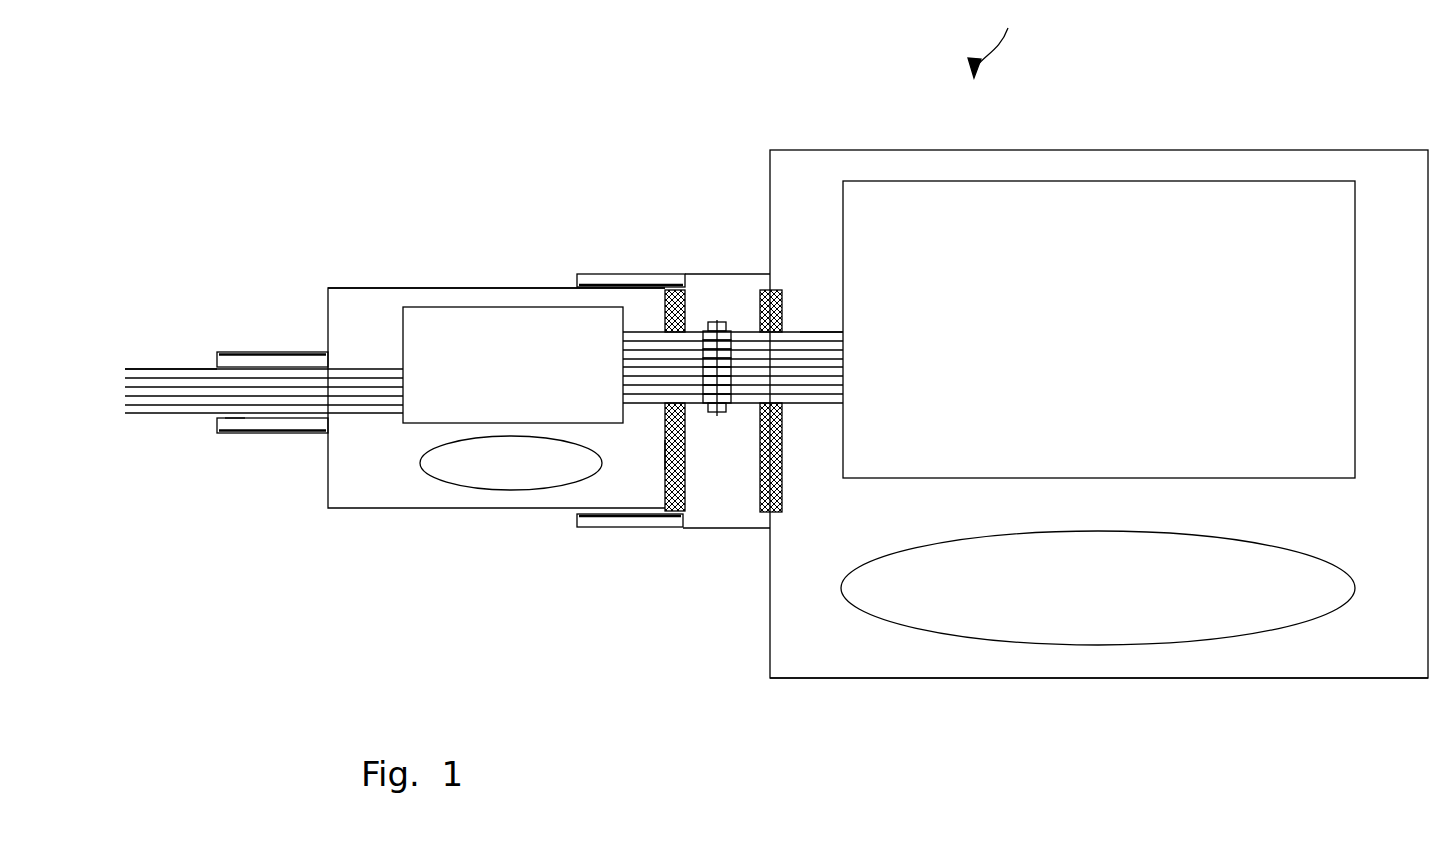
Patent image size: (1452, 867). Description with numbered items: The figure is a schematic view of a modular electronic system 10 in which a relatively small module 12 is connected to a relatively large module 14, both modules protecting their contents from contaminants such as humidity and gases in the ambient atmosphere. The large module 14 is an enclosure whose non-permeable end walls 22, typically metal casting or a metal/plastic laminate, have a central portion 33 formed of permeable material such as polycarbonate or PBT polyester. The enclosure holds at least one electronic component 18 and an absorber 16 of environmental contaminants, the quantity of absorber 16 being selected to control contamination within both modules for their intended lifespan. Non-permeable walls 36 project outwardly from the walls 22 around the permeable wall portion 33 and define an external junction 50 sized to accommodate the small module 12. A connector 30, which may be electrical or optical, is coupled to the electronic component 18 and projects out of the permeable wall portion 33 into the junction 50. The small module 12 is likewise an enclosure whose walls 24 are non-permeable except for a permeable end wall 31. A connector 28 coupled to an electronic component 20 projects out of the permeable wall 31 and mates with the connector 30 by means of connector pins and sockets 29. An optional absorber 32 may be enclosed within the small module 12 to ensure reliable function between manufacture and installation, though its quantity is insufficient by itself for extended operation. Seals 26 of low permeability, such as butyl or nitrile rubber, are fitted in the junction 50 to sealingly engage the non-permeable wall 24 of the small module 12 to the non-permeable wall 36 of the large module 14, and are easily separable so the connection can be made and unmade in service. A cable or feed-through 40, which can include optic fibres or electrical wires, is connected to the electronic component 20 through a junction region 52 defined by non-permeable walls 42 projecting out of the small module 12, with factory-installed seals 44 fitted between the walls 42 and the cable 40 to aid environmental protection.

The modular electronic system 10 is at (997, 40).
The small module 12 is at (508, 287).
The large module 14 is at (1190, 150).
The absorber 16 is at (1085, 600).
The electronic component 18 is at (1085, 343).
The electronic component 20 is at (498, 378).
The non-permeable end wall 22 is at (1283, 679).
The non-permeable walls 24 is at (358, 509).
The seals 26 is at (618, 283).
The connector 28 is at (623, 345).
The connector pins and sockets 29 is at (713, 416).
The connector 30 is at (843, 328).
The permeable wall 31 is at (660, 455).
The absorber 32 is at (498, 475).
The permeable wall portion 33 is at (783, 482).
The non-permeable walls 36 is at (700, 274).
The cable or feed-through 40 is at (148, 417).
The non-permeable walls 42 is at (235, 352).
The seals 44 is at (236, 424).
The external junction 50 is at (715, 515).
The junction region 52 is at (170, 372).